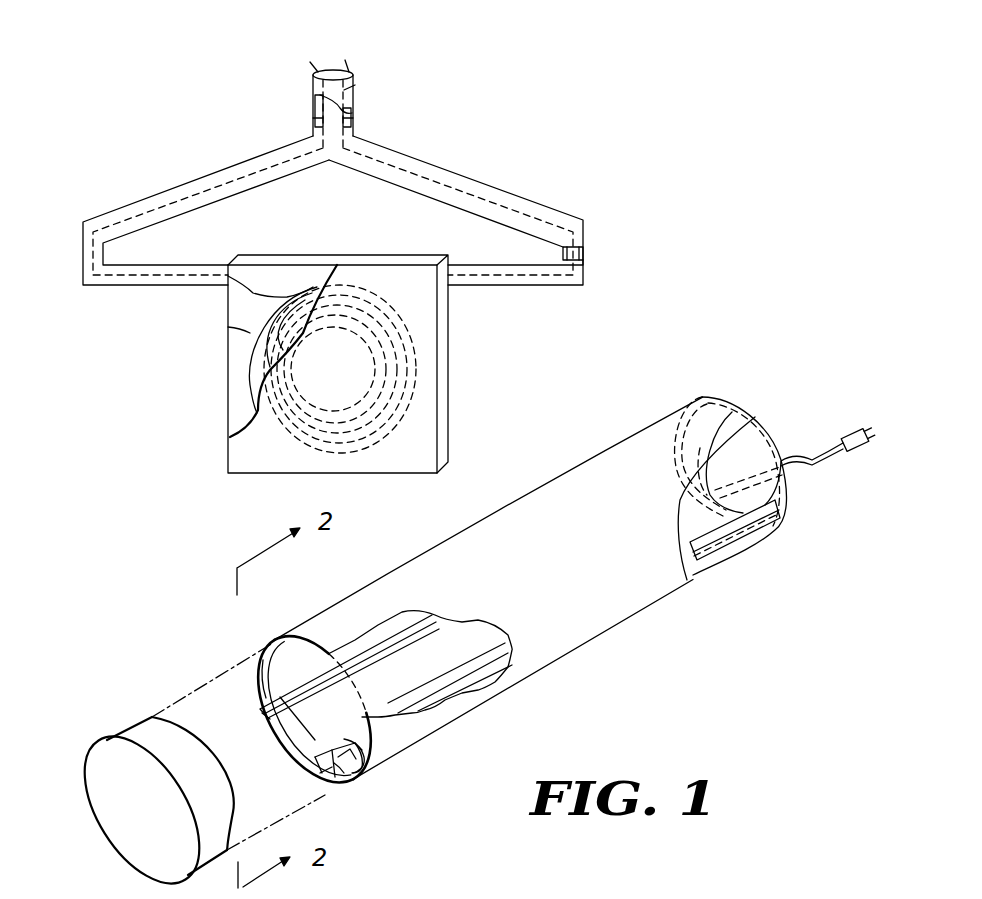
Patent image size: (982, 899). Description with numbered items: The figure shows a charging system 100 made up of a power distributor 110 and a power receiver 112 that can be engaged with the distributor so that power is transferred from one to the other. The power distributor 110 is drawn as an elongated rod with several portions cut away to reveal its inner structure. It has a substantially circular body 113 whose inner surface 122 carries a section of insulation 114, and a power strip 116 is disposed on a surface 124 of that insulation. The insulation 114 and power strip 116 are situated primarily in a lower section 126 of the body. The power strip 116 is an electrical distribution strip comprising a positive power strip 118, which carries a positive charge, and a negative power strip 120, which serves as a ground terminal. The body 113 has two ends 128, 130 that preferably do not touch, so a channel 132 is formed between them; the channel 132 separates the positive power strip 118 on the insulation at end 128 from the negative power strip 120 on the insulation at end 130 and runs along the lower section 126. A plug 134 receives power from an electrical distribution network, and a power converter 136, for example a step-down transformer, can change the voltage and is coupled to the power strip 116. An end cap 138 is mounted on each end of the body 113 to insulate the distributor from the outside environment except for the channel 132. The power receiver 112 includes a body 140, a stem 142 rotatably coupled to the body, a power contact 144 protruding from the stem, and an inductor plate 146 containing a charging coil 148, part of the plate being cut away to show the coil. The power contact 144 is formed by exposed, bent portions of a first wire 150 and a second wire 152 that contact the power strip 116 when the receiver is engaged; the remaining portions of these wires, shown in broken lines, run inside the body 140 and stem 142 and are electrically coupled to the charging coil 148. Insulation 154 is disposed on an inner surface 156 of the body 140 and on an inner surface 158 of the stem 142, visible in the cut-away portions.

The charging system 100 is at (696, 358).
The power distributor 110 is at (665, 406).
The power receiver 112 is at (553, 180).
The body 113 is at (460, 562).
The insulation 114 is at (262, 713).
The power strip 116 is at (311, 708).
The positive power strip 118 is at (297, 735).
The negative power strip 120 is at (345, 756).
The inner surface 122 is at (262, 663).
The surface 124 is at (293, 638).
The lower section 126 is at (567, 632).
The end 128 is at (320, 773).
The end 130 is at (375, 753).
The channel 132 is at (334, 768).
The plug 134 is at (858, 455).
The power converter 136 is at (783, 494).
The end cap 138 is at (748, 430).
The body 140 is at (166, 188).
The stem 142 is at (355, 88).
The power contact 144 is at (330, 48).
The inductor plate 146 is at (448, 400).
The charging coil 148 is at (250, 332).
The first wire 150 is at (310, 62).
The second wire 152 is at (350, 58).
The insulation 154 is at (315, 117).
The inner surface 156 is at (563, 250).
The inner surface 158 is at (316, 100).